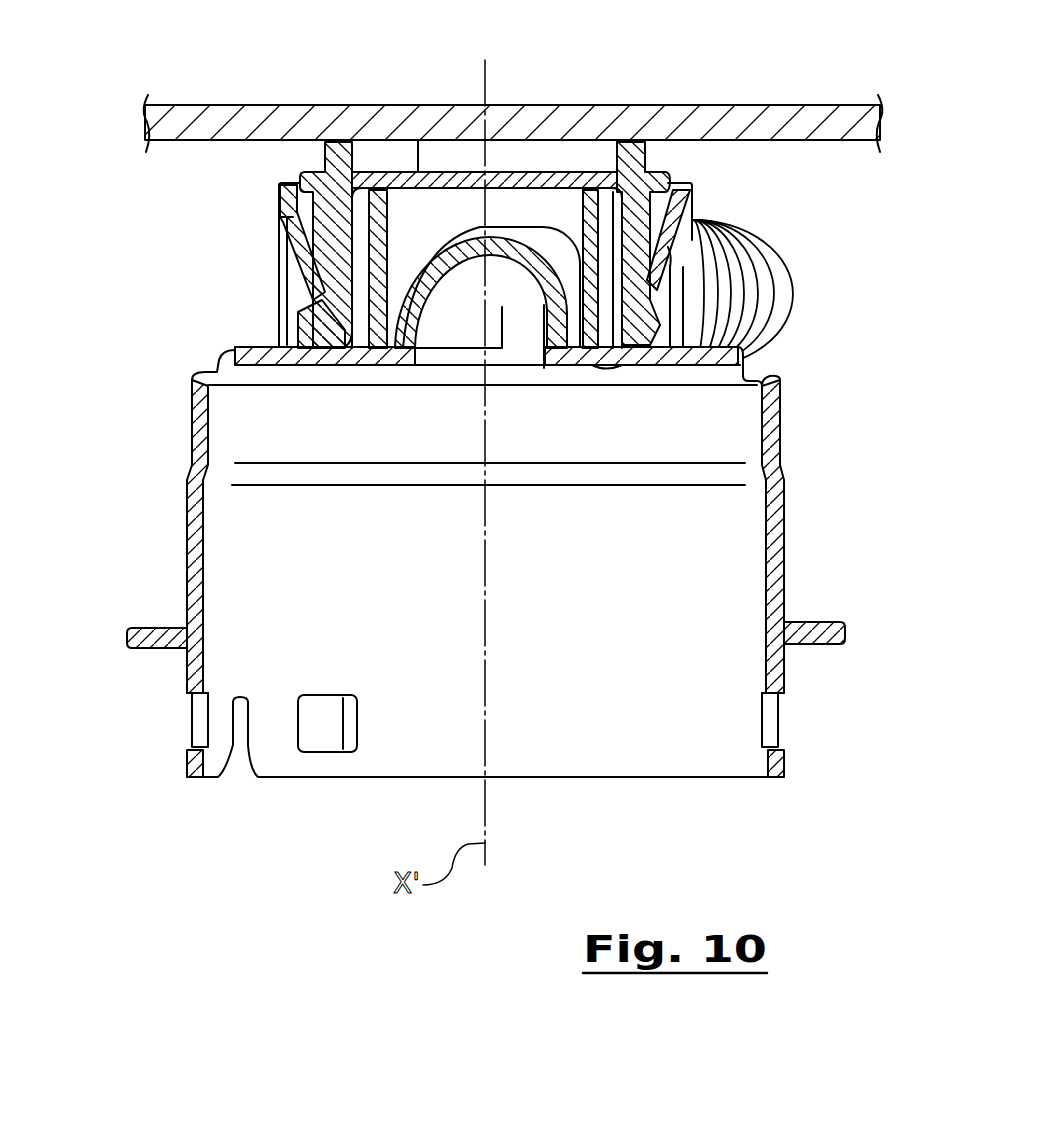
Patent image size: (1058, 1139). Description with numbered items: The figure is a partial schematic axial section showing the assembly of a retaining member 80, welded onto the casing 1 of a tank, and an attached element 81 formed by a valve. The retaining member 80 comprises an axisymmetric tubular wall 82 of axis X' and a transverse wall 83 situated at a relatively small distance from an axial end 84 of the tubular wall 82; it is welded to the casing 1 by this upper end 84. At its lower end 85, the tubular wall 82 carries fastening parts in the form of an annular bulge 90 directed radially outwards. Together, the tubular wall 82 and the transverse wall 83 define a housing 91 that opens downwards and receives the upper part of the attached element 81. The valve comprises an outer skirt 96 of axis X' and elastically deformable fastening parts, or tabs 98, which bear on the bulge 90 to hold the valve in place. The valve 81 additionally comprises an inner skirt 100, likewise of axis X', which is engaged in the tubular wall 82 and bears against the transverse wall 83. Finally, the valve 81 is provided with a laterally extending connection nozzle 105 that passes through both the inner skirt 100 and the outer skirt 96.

The casing 1 is at (303, 98).
The retaining member 80 is at (293, 161).
The attached element 81 is at (158, 533).
The tubular wall 82 is at (692, 183).
The transverse wall 83 is at (540, 173).
The axial end 84 is at (633, 138).
The lower end 85 is at (637, 360).
The annular bulge 90 is at (323, 323).
The housing 91 is at (363, 213).
The outer skirt 96 is at (278, 214).
The tabs 98 is at (295, 260).
The inner skirt 100 is at (397, 223).
The connection nozzle 105 is at (783, 303).